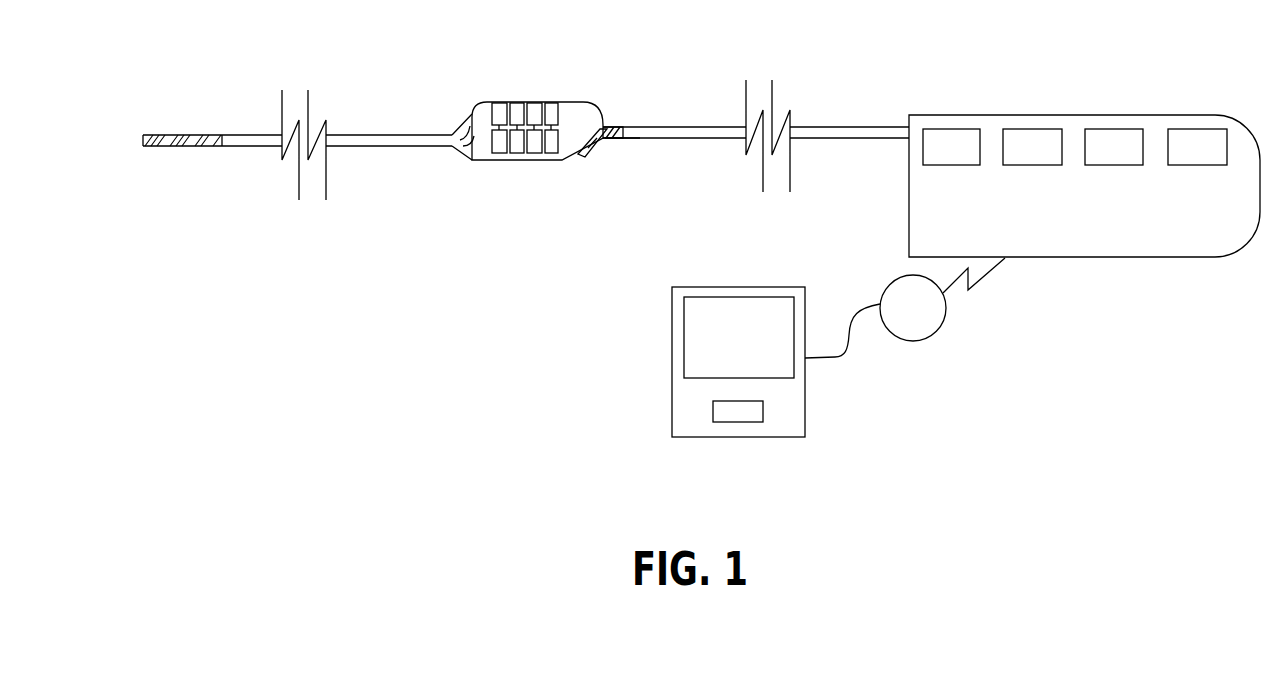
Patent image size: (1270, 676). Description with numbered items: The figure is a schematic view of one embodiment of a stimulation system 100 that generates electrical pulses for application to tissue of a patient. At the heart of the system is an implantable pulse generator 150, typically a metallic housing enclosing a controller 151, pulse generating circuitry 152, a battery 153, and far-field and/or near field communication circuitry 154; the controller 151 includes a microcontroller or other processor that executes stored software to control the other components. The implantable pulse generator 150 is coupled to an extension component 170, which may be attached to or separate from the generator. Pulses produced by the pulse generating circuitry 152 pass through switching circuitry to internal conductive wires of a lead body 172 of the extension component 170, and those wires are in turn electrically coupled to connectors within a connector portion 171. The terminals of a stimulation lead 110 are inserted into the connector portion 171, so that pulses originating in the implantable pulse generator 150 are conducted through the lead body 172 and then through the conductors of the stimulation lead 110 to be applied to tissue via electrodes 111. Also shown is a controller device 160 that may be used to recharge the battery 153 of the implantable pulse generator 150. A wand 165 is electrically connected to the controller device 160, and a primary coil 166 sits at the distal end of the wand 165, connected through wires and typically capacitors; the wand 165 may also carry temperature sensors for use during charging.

The stimulation system 100 is at (375, 350).
The stimulation lead 110 is at (245, 149).
The electrodes 111 is at (205, 148).
The implantable pulse generator 150 is at (1155, 260).
The controller 151 is at (935, 157).
The pulse generating circuitry 152 is at (1016, 157).
The battery 153 is at (1098, 157).
The far-field and/or near field communication circuitry 154 is at (1181, 157).
The controller device 160 is at (703, 283).
The wand 165 is at (840, 358).
The primary coil 166 is at (913, 341).
The extension component 170 is at (614, 114).
The connector portion 171 is at (540, 102).
The lead body 172 is at (665, 140).